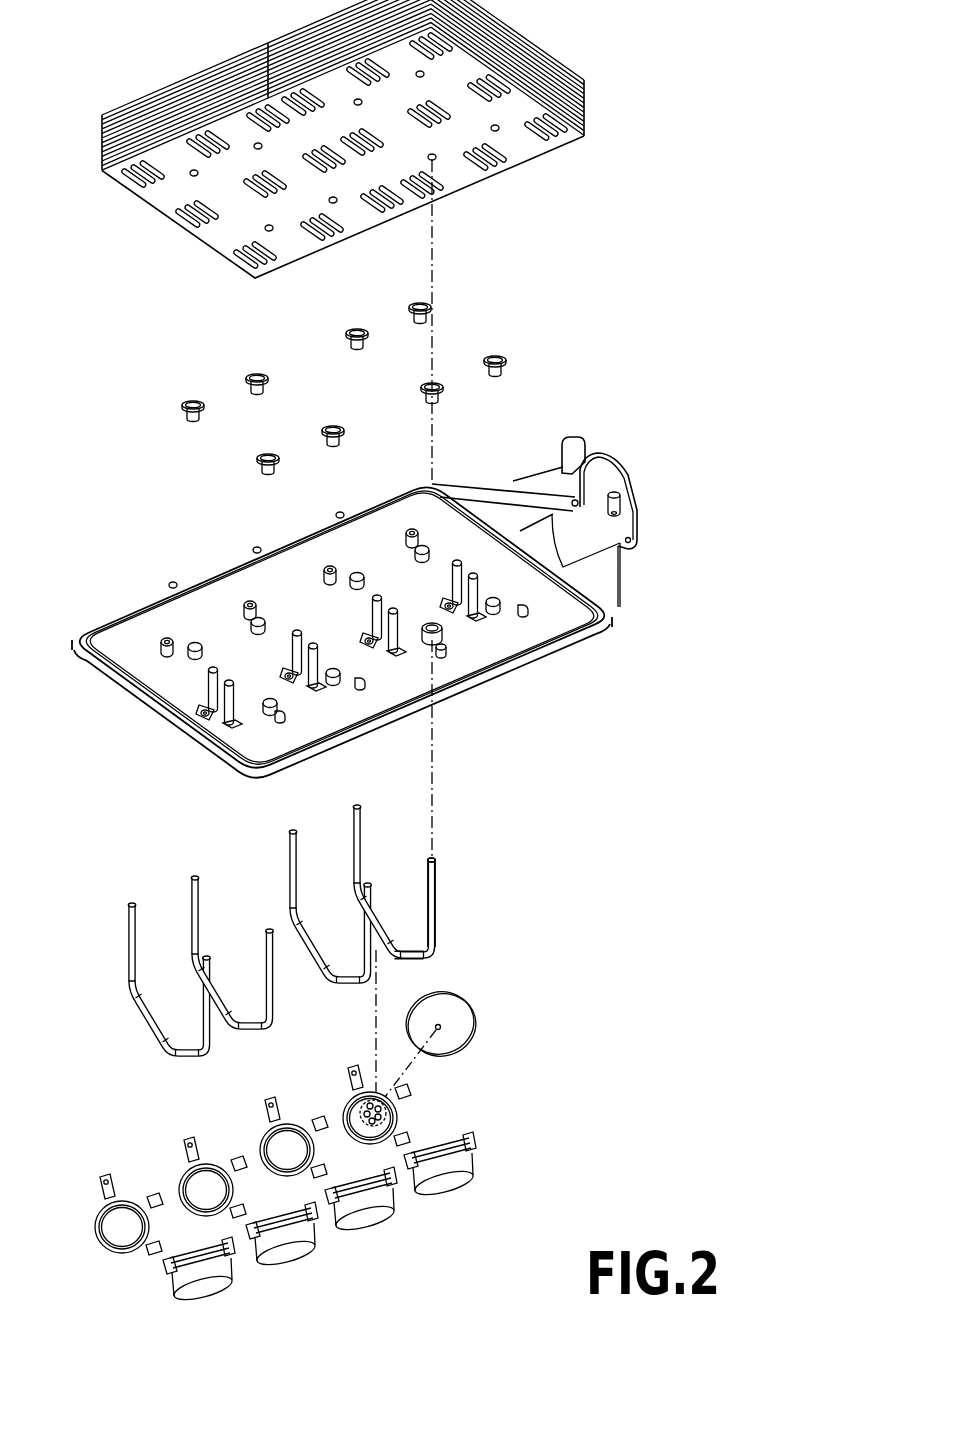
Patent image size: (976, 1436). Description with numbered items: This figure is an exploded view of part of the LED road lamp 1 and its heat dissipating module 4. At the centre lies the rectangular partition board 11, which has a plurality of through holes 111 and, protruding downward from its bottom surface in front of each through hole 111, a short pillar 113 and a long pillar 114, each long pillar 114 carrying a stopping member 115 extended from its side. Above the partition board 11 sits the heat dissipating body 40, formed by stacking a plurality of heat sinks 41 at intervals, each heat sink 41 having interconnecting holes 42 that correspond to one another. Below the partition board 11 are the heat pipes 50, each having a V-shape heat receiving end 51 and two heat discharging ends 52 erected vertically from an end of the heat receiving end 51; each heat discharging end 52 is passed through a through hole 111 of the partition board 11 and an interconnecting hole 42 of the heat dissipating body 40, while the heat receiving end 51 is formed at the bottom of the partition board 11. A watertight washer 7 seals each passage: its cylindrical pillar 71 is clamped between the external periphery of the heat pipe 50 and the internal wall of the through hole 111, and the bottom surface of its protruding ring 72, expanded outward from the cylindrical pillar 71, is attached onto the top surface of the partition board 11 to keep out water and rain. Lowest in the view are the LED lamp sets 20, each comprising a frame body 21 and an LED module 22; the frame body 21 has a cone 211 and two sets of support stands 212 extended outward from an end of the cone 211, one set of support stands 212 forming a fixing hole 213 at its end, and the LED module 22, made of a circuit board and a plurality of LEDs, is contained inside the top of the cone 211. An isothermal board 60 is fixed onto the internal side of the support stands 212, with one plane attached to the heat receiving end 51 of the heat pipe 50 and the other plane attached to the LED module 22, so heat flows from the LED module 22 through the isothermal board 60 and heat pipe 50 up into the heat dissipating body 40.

The LED road lamp 1 is at (677, 453).
The heat dissipating module 4 is at (657, 76).
The watertight washer 7 is at (537, 342).
The partition board 11 is at (580, 657).
The LED lamp set 20 is at (510, 1170).
The frame body 21 is at (405, 1120).
The LED module 22 is at (378, 1150).
The heat dissipating body 40 is at (572, 60).
The heat sink 41 is at (527, 147).
The interconnecting hole 42 is at (432, 157).
The heat pipe 50 is at (447, 873).
The heat receiving end 51 is at (418, 957).
The heat discharging end 52 is at (432, 915).
The isothermal board 60 is at (465, 1027).
The cylindrical pillar 71 is at (437, 395).
The protruding ring 72 is at (433, 380).
The through hole 111 is at (425, 633).
The short pillar 113 is at (442, 650).
The long pillar 114 is at (213, 680).
The stopping member 115 is at (203, 690).
The cone 211 is at (345, 1108).
The support stand 212 is at (410, 1097).
The fixing hole 213 is at (353, 1067).